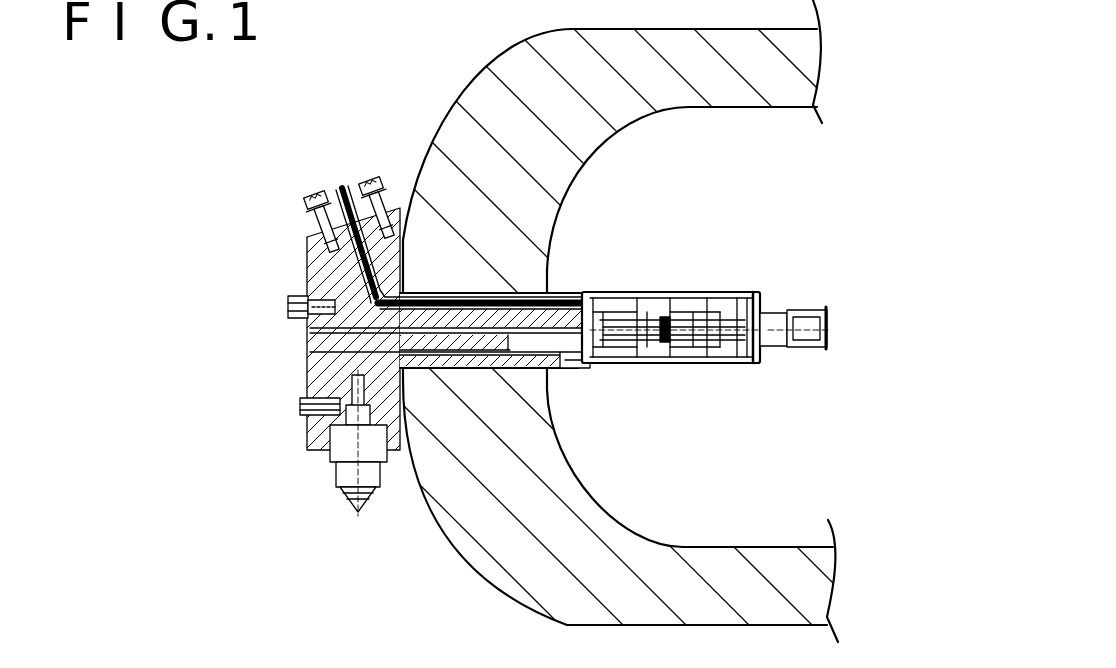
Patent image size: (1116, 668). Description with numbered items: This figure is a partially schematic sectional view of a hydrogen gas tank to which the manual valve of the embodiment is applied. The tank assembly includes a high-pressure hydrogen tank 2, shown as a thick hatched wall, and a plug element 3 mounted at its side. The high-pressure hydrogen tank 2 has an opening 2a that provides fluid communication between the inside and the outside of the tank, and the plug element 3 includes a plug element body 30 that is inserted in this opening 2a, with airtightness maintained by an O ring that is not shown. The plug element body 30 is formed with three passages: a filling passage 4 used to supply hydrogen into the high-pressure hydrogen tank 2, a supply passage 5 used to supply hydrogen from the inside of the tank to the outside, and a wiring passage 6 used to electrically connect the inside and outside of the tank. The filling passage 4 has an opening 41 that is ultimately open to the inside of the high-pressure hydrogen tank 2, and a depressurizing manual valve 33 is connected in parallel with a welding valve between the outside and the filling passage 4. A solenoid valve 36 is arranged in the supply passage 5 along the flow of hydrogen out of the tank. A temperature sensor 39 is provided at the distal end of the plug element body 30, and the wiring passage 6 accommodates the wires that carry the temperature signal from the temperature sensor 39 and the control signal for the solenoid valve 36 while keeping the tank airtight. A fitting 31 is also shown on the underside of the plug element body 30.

The high-pressure hydrogen tank 2 is at (546, 158).
The opening 2a is at (517, 287).
The plug element 3 is at (488, 334).
The filling passage 4 is at (318, 352).
The supply passage 5 is at (306, 326).
The wiring passage 6 is at (565, 293).
The plug element body 30 is at (310, 384).
The fitting 31 is at (335, 466).
The depressurizing manual valve 33 is at (307, 226).
The solenoid valve 36 is at (683, 363).
The temperature sensor 39 is at (805, 347).
The opening 41 is at (577, 368).